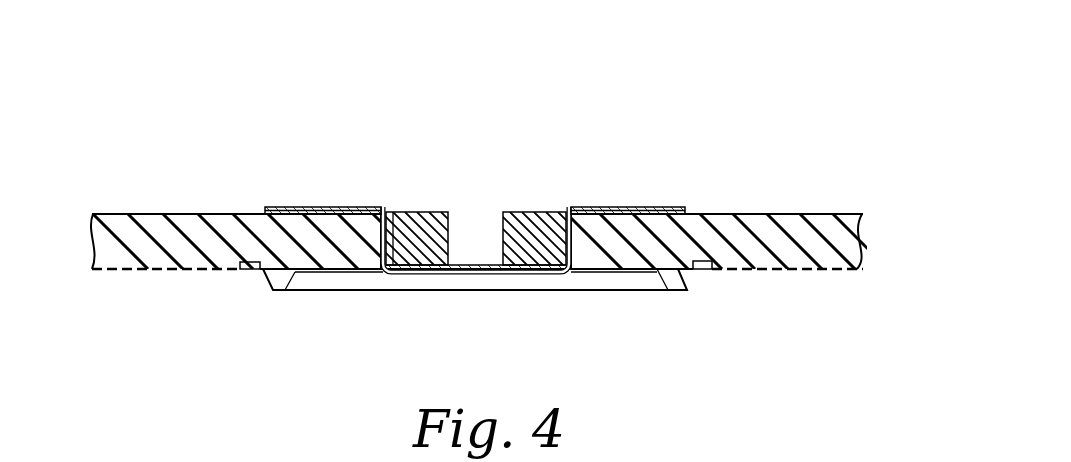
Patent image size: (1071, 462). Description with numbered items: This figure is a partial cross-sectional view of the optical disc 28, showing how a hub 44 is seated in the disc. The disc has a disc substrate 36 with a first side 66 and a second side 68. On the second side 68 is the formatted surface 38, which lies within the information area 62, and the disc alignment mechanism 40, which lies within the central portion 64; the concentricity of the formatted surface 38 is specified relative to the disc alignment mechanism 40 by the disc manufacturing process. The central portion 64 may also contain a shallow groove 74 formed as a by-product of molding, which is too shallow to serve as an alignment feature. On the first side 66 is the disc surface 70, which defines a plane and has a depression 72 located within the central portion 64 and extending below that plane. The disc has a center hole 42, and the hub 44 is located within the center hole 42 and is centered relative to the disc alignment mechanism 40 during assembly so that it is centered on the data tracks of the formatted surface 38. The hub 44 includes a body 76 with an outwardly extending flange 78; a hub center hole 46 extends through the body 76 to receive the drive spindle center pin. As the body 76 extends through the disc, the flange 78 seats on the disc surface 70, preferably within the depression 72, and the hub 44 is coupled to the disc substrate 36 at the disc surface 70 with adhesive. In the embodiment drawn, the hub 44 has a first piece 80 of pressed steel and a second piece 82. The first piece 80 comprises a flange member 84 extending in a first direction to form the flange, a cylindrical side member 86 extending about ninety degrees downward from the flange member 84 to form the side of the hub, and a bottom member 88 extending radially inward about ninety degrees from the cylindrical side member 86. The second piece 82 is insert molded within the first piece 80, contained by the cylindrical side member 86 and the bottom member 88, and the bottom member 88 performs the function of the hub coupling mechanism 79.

The optical disc 28 is at (240, 78).
The disc substrate 36 is at (837, 233).
The formatted surface 38 is at (123, 275).
The disc alignment mechanism 40 is at (275, 288).
The center hole 42 is at (395, 277).
The hub 44 is at (580, 203).
The hub center hole 46 is at (490, 262).
The information area 62 is at (745, 182).
The central portion 64 is at (650, 146).
The first side 66 is at (206, 186).
The second side 68 is at (166, 292).
The disc surface 70 is at (790, 214).
The depression 72 is at (688, 208).
The groove 74 is at (248, 270).
The body 76 is at (435, 212).
The flange 78 is at (347, 207).
The hub coupling mechanism 79 is at (535, 287).
The first piece 80 is at (580, 288).
The second piece 82 is at (535, 210).
The flange member 84 is at (362, 208).
The cylindrical side member 86 is at (399, 248).
The bottom member 88 is at (428, 278).